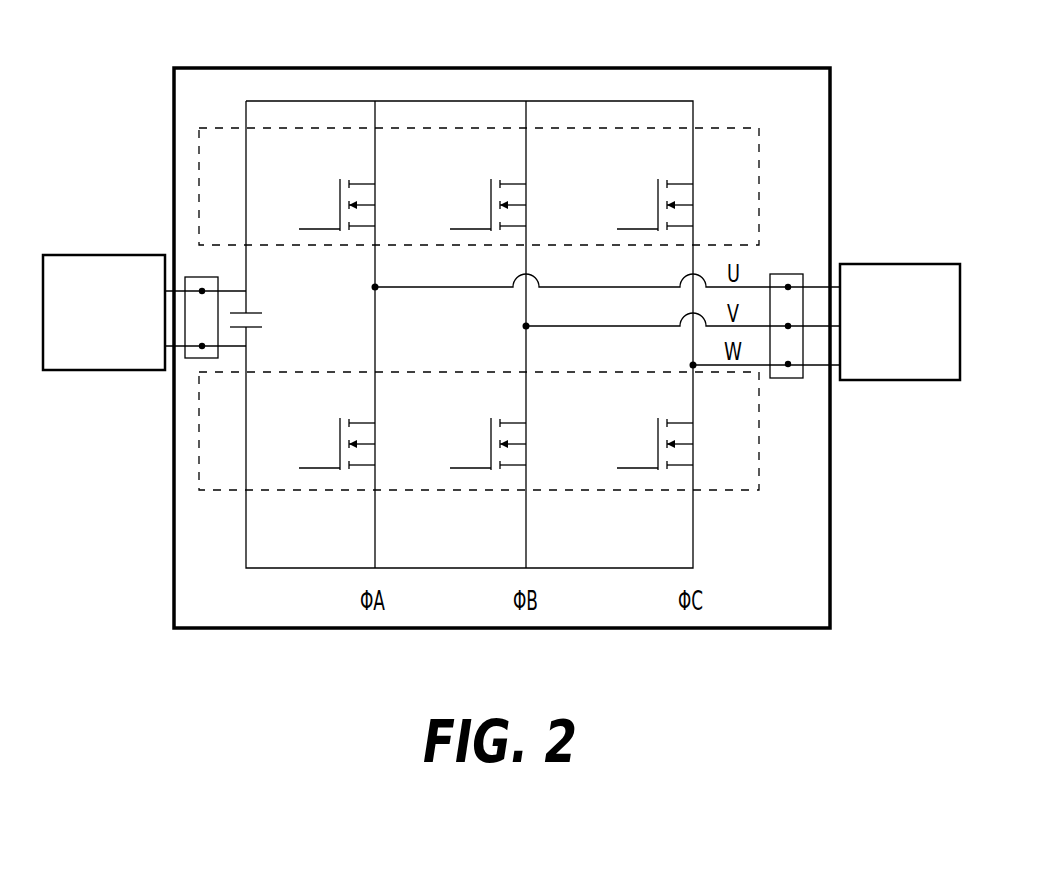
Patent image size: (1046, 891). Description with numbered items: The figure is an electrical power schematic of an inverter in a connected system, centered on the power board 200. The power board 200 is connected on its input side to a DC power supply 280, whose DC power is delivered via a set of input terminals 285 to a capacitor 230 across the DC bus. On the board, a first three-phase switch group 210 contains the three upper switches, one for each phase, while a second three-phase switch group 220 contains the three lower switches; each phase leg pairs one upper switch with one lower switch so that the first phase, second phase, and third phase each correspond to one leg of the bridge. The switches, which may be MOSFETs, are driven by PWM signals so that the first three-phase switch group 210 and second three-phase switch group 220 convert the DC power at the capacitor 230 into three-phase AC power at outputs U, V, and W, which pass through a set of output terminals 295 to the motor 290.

The power board 200 is at (508, 68).
The first three-phase switch group 210 is at (422, 128).
The second three-phase switch group 220 is at (435, 373).
The capacitor 230 is at (265, 318).
The DC power supply 280 is at (88, 255).
The set of input terminals 285 is at (217, 277).
The motor 290 is at (880, 264).
The set of output terminals 295 is at (780, 274).